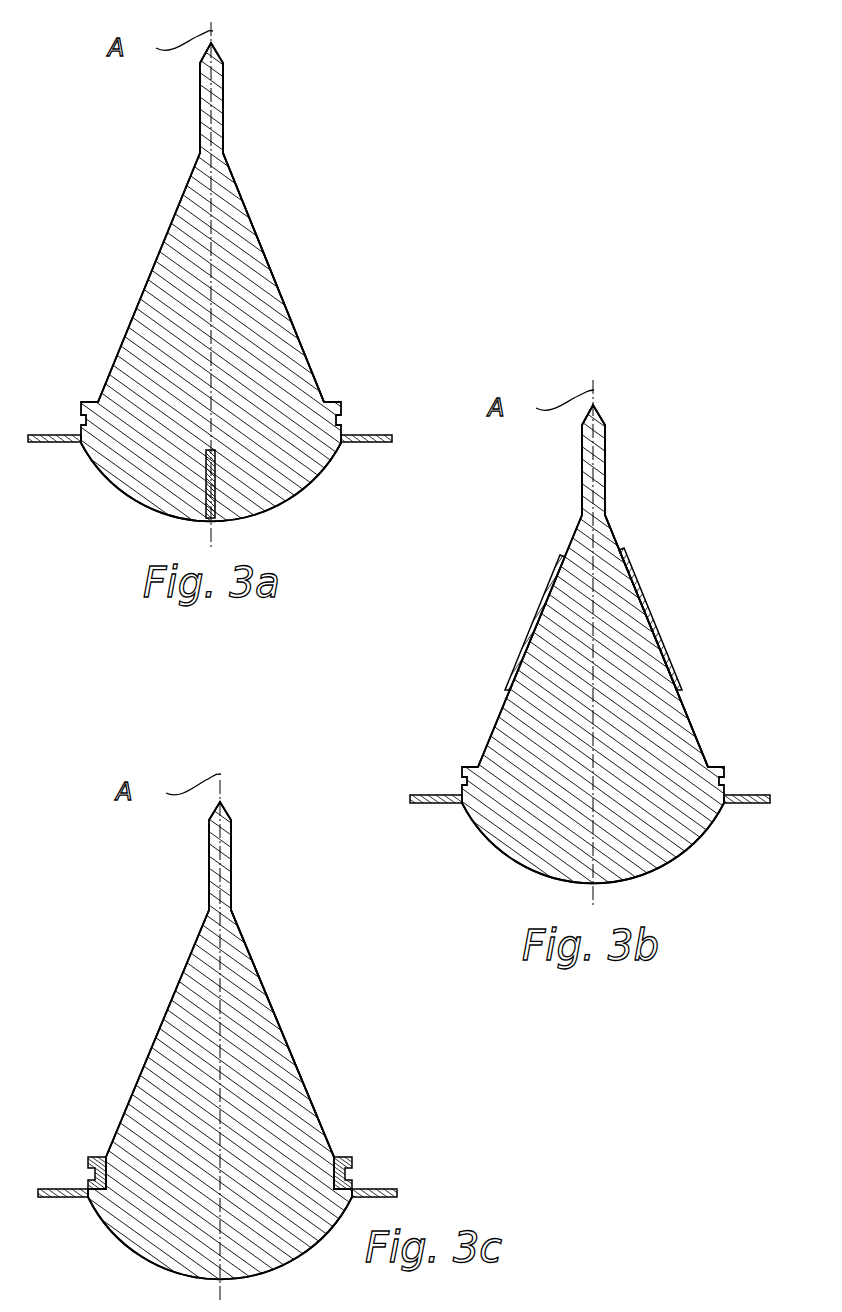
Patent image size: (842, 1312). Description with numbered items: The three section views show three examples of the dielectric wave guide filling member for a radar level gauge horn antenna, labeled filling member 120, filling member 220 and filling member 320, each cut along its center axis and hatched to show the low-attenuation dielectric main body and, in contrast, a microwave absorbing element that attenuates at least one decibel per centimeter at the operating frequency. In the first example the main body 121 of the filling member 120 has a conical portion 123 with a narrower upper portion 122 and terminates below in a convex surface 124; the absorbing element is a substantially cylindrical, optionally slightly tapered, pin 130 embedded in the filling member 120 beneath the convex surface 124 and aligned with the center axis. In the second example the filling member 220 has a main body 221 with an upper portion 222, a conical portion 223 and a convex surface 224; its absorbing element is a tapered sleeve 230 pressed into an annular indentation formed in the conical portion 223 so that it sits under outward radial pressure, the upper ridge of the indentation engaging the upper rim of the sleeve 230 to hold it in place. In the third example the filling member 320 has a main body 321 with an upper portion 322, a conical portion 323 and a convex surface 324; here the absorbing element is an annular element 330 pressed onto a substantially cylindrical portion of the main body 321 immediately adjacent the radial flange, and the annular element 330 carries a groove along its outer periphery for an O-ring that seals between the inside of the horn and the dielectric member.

In FIG. 3A, the dielectric filling member 120 is at (122, 257).
In FIG. 3A, the conical portion 121 is at (296, 331).
In FIG. 3A, the tip shaft 122 is at (223, 111).
In FIG. 3A, the conical outer surface 123 is at (262, 248).
In FIG. 3A, the convex surface 124 is at (136, 501).
In FIG. 3A, the cylindrical pin 130 is at (216, 474).
In FIG. 3B, the dielectric filling member 220 is at (488, 688).
In FIG. 3B, the conical portion 221 is at (585, 530).
In FIG. 3B, the tip shaft 222 is at (605, 475).
In FIG. 3B, the conical portion 223 is at (683, 708).
In FIG. 3B, the hemispherical base 224 is at (513, 863).
In FIG. 3B, the tapered sleeve 230 is at (656, 648).
In FIG. 3C, the dielectric filling member 320 is at (110, 1006).
In FIG. 3C, the main body 321 is at (254, 991).
In FIG. 3C, the tip shaft 322 is at (232, 877).
In FIG. 3C, the conical outer surface 323 is at (298, 1073).
In FIG. 3C, the hemispherical base 324 is at (150, 1260).
In FIG. 3C, the annular element 330 is at (347, 1165).